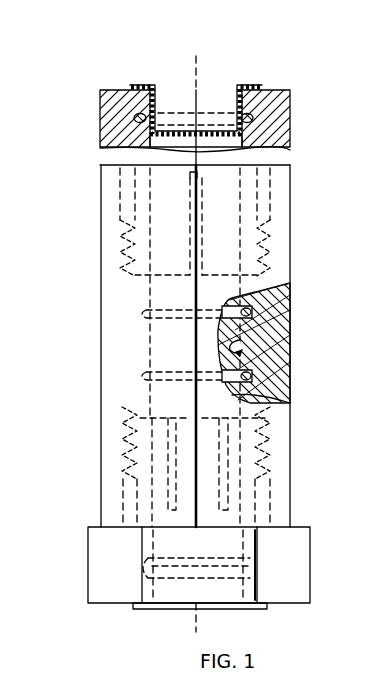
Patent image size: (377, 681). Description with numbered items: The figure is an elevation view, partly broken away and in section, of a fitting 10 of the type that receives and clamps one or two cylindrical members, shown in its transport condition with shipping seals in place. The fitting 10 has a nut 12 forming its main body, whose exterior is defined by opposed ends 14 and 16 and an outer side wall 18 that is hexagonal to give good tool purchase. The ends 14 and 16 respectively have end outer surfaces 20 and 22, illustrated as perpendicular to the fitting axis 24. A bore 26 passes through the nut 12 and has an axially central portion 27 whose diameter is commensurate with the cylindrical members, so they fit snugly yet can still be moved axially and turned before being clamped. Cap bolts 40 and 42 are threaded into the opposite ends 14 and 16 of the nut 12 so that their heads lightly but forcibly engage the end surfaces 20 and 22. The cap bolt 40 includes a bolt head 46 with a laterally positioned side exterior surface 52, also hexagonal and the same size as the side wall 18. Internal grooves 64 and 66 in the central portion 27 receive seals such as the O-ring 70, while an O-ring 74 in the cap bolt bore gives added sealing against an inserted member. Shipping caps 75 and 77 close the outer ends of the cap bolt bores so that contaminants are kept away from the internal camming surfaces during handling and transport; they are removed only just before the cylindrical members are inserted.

The fitting 10 is at (109, 61).
The nut 12 is at (97, 240).
The end 14 is at (108, 180).
The end 16 is at (108, 507).
The outer side wall 18 is at (112, 327).
The end outer surface 20 is at (108, 158).
The end outer surface 22 is at (108, 528).
The fitting axis 24 is at (202, 70).
The bore 26 is at (244, 348).
The axially central portion 27 is at (262, 425).
The cap bolt 40 is at (222, 75).
The cap bolt 42 is at (86, 580).
The bolt head 46 is at (282, 108).
The side exterior surface 52 is at (277, 161).
The internal groove 64 is at (255, 371).
The internal groove 66 is at (252, 308).
The O-ring 70 is at (262, 397).
The O-ring 74 is at (134, 116).
The shipping cap 75 is at (141, 84).
The shipping cap 77 is at (152, 611).